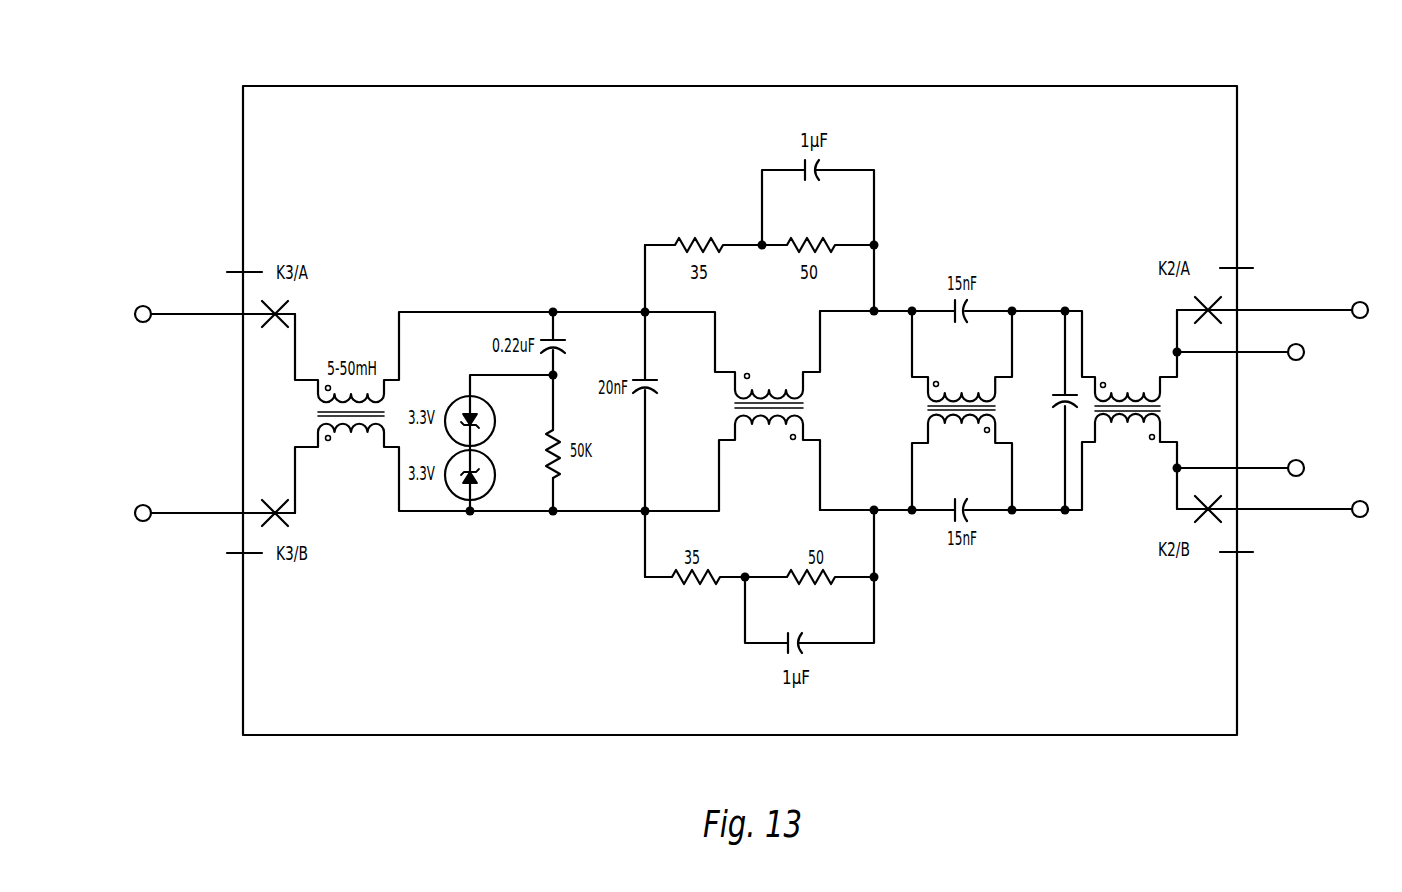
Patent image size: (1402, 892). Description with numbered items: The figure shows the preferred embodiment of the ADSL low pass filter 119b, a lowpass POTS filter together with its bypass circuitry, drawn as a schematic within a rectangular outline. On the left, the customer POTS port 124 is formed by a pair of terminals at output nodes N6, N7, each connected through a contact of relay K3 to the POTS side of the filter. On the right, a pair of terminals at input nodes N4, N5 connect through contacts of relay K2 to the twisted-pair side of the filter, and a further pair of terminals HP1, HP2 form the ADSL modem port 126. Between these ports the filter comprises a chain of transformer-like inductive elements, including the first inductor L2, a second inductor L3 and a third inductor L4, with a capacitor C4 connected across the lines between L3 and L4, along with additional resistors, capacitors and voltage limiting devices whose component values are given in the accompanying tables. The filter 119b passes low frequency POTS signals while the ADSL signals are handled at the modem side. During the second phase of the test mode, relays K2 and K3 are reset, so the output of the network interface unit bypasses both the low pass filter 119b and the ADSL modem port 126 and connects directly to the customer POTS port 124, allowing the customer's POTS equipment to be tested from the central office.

The ADSL low pass filter 119b is at (938, 240).
The customer POTS port 124 is at (190, 392).
The ADSL modem port 126 is at (1264, 407).
The input node N4 is at (1315, 304).
The input node N5 is at (1305, 515).
The output node N6 is at (195, 312).
The output node N7 is at (215, 484).
The handset terminal HP1 is at (1240, 344).
The handset terminal HP2 is at (1240, 460).
The transformer L2 is at (777, 410).
The transformer L3 is at (962, 410).
The transformer L4 is at (1136, 409).
The capacitor C4 is at (1053, 410).